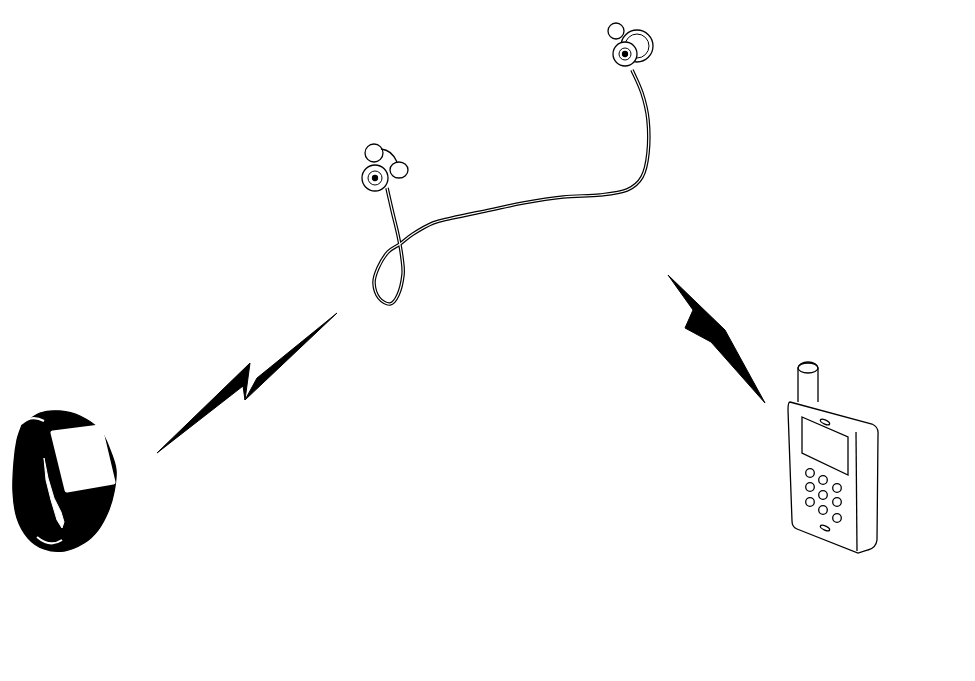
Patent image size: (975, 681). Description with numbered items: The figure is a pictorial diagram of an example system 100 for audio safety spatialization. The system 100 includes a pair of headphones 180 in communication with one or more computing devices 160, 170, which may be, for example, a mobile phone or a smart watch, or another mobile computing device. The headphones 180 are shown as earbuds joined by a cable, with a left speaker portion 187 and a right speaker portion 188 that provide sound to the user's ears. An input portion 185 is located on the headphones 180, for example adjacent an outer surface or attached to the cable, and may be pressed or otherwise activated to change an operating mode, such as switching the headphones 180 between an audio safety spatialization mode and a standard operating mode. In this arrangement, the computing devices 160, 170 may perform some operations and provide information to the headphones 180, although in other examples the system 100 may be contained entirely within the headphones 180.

The system 100 is at (36, 58).
The computing device 160 is at (867, 413).
The computing device 170 is at (56, 405).
The headphones 180 is at (413, 93).
The input portion 185 is at (364, 189).
The left speaker portion 187 is at (629, 77).
The right speaker portion 188 is at (408, 175).